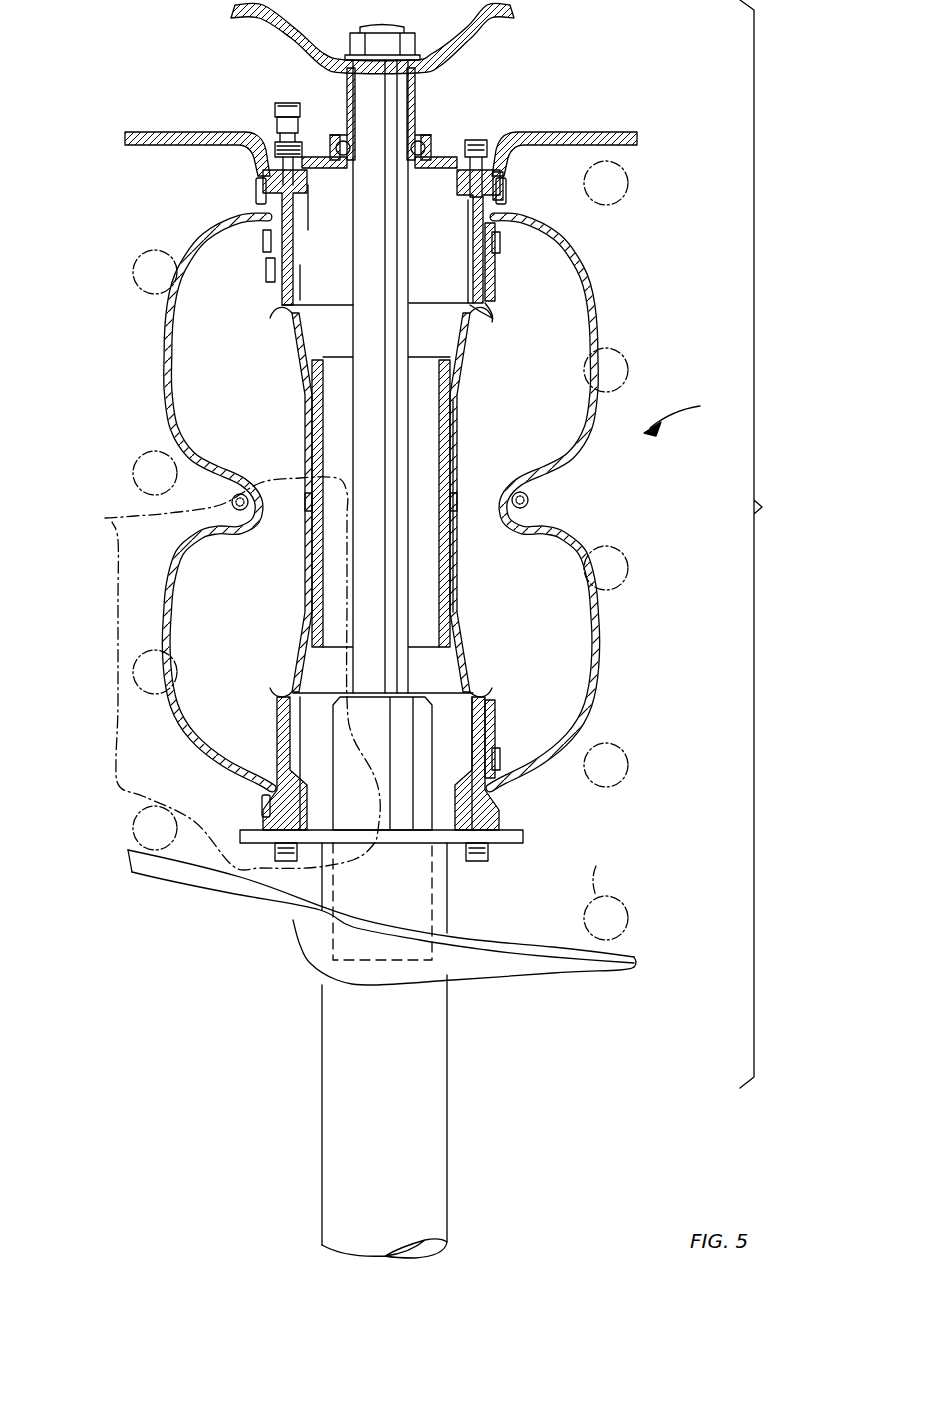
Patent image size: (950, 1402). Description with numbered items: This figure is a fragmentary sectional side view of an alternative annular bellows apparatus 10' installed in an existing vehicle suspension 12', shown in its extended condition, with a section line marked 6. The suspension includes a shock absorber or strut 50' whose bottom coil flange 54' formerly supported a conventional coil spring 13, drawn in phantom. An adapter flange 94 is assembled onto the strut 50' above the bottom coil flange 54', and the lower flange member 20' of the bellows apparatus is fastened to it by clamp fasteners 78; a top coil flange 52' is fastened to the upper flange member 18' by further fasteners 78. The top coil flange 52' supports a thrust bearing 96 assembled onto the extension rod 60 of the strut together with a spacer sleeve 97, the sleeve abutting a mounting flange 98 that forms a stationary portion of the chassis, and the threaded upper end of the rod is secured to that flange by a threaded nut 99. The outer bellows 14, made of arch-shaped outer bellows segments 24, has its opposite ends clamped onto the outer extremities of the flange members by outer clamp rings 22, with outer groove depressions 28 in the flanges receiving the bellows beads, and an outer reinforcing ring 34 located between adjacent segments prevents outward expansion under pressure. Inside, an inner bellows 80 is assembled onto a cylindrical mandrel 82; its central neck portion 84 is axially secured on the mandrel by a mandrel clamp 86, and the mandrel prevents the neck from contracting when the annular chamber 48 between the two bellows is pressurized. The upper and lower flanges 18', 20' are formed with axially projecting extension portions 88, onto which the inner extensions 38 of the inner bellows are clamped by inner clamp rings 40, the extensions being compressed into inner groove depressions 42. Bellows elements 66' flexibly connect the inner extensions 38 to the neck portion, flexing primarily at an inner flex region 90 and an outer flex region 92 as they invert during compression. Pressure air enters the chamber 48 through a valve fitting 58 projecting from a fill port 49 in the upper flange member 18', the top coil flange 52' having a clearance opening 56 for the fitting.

The annular bellows apparatus 10' is at (691, 417).
The vehicle suspension 12' is at (770, 544).
The coil spring 13 is at (589, 856).
The outer bellows 14 is at (598, 258).
The upper flange member 18' is at (454, 236).
The lower flange member 20' is at (381, 750).
The outer clamp rings 22 is at (262, 812).
The outer bellows segments 24 is at (176, 755).
The outer groove depressions 28 is at (505, 185).
The outer reinforcing ring 34 is at (530, 500).
The inner extensions 38 is at (497, 720).
The inner clamp rings 40 is at (501, 758).
The inner groove depressions 42 is at (267, 270).
The annular chamber 48 is at (530, 579).
The fill port 49 is at (263, 240).
The strut 50' is at (348, 1050).
The top coil flange 52' is at (381, 130).
The bottom coil flange 54' is at (382, 917).
The clearance opening 56 is at (286, 131).
The valve fitting 58 is at (286, 103).
The extension rod 60 is at (352, 240).
The bellows elements 66' is at (355, 502).
The clamp fasteners 78 is at (484, 862).
The inner bellows 80 is at (472, 340).
The mandrel 82 is at (447, 356).
The neck portion 84 is at (454, 432).
The mandrel clamp 86 is at (457, 490).
The extension portions 88 is at (302, 727).
The inner flex region 90 is at (310, 612).
The outer flex region 92 is at (300, 690).
The adapter flange 94 is at (448, 888).
The thrust bearing 96 is at (430, 142).
The spacer sleeve 97 is at (418, 108).
The mounting flange 98 is at (466, 30).
The threaded nut 99 is at (400, 33).
The section line 6 is at (229, 673).